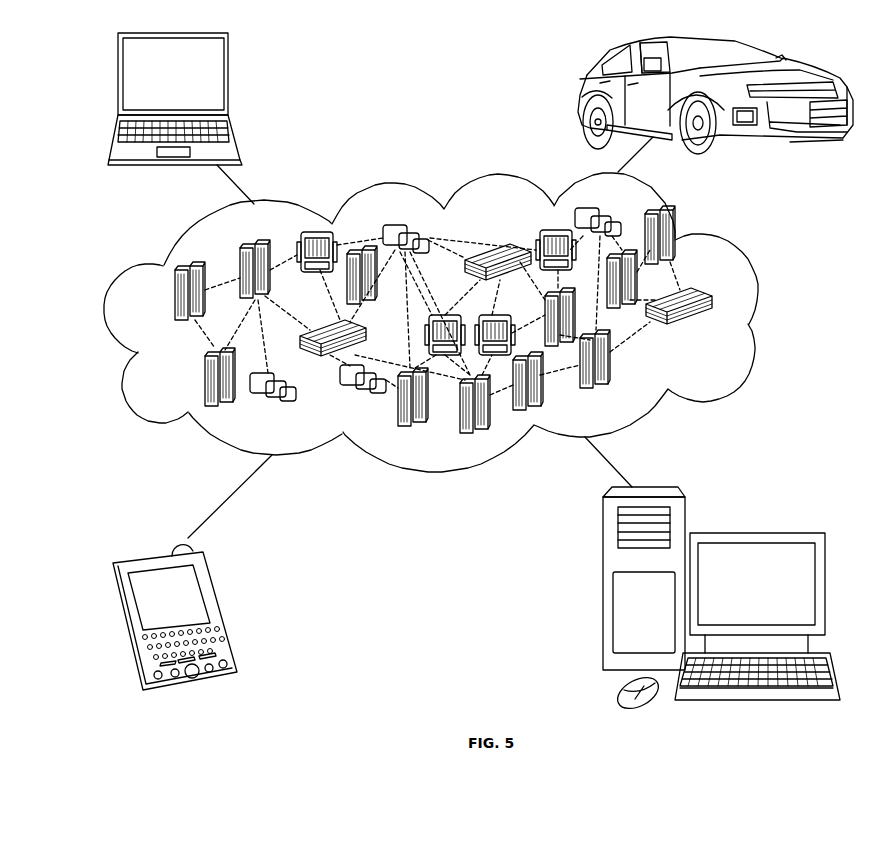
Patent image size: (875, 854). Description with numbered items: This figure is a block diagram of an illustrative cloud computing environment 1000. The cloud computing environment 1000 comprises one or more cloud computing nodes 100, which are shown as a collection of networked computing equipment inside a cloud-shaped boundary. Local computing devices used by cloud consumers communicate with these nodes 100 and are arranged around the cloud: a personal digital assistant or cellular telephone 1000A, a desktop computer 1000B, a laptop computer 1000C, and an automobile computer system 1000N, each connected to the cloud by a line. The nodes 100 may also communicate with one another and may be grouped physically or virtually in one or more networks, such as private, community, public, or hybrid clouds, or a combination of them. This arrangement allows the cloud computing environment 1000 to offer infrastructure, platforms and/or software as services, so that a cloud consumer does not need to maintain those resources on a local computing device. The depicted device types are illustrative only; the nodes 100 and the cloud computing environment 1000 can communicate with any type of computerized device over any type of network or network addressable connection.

The laptop computer 1000C is at (230, 83).
The automobile computer system 1000N is at (580, 95).
The cloud computing environment 1000 is at (461, 322).
The cloud computing nodes 100 is at (704, 326).
The personal digital assistant or cellular telephone 1000A is at (223, 607).
The desktop computer 1000B is at (753, 532).